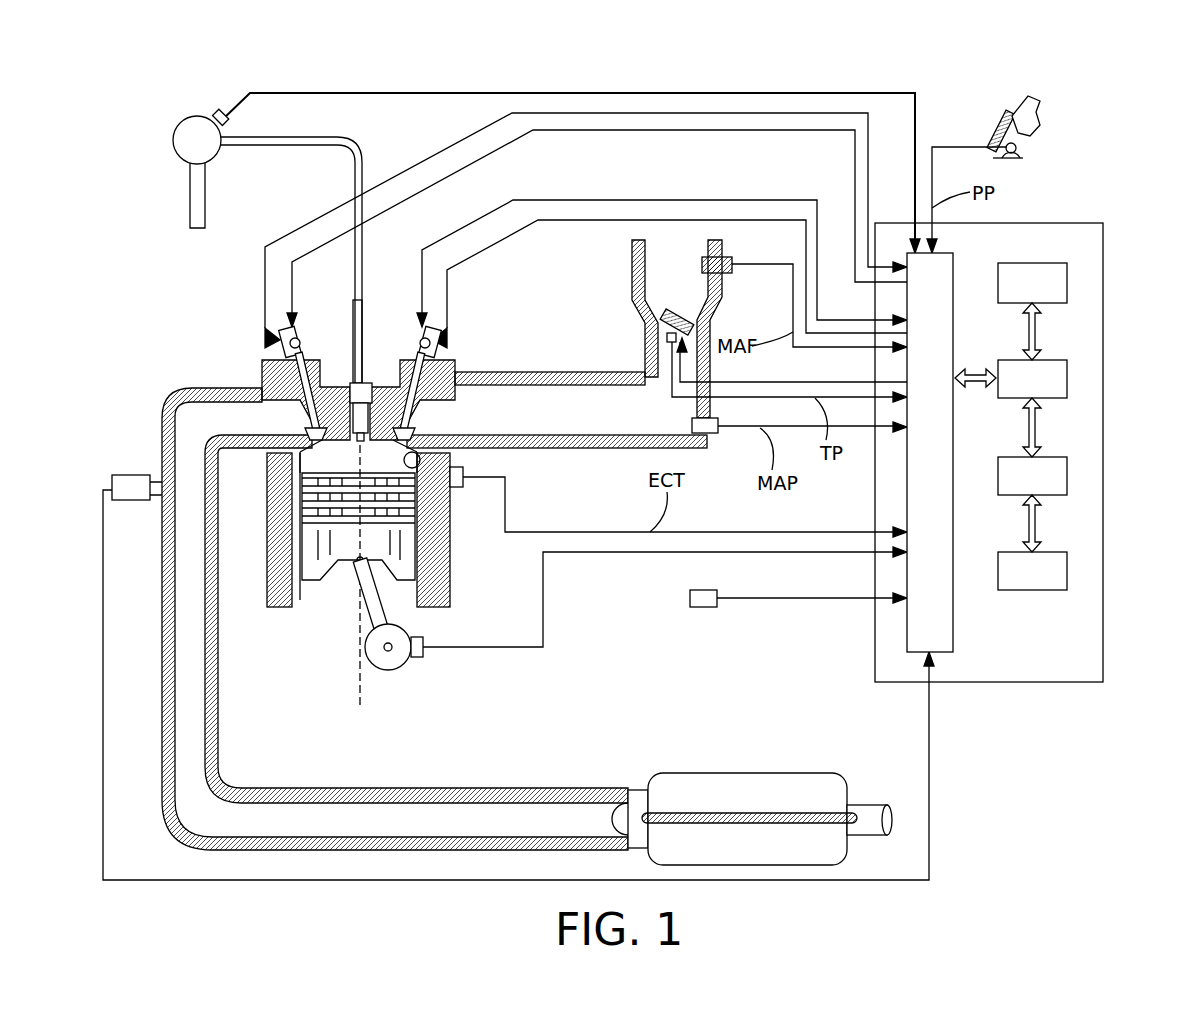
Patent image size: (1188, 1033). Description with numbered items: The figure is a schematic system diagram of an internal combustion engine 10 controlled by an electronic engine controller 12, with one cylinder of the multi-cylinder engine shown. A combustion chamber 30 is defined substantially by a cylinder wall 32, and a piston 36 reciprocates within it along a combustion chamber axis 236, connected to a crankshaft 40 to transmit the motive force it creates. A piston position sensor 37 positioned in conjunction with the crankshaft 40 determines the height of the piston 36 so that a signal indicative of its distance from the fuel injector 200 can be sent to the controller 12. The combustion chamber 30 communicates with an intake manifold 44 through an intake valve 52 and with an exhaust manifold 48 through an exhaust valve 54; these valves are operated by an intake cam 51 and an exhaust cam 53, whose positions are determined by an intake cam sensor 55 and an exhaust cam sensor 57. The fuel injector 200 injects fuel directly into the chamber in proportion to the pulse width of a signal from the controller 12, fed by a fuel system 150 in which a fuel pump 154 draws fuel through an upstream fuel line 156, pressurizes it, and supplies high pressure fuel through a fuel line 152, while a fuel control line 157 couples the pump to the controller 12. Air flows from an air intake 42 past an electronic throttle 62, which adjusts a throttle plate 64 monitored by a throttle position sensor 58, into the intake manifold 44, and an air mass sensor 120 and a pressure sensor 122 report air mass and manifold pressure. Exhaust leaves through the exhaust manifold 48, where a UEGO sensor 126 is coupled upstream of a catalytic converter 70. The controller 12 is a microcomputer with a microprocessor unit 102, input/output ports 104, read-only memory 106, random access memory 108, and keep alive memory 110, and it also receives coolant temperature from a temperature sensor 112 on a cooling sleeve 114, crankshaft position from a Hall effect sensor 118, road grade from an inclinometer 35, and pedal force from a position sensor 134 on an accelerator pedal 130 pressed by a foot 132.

The internal combustion engine 10 is at (170, 322).
The electronic engine controller 12 is at (1105, 242).
The combustion chamber 30 is at (335, 460).
The cylinder wall 32 is at (302, 590).
The inclinometer 35 is at (708, 607).
The piston 36 is at (345, 558).
The piston position sensor 37 is at (418, 660).
The crankshaft 40 is at (385, 672).
The air intake 42 is at (688, 282).
The intake manifold 44 is at (596, 428).
The exhaust manifold 48 is at (238, 430).
The intake cam 51 is at (415, 325).
The intake valve 52 is at (407, 430).
The exhaust cam 53 is at (302, 325).
The exhaust valve 54 is at (262, 395).
The intake cam sensor 55 is at (432, 355).
The exhaust cam sensor 57 is at (278, 355).
The throttle position sensor 58 is at (668, 338).
The electronic throttle 62 is at (693, 328).
The throttle plate 64 is at (662, 322).
The catalytic converter 70 is at (668, 773).
The microprocessor unit 102 is at (1067, 380).
The input/output ports 104 is at (955, 268).
The read-only memory 106 is at (1067, 283).
The random access memory 108 is at (1067, 477).
The keep alive memory 110 is at (1067, 572).
The temperature sensor 112 is at (457, 490).
The cooling sleeve 114 is at (450, 575).
The Hall effect sensor 118 is at (424, 648).
The air mass sensor 120 is at (725, 258).
The pressure sensor 122 is at (712, 435).
The Universal Exhaust Gas Oxygen (UEGO) sensor 126 is at (108, 482).
The accelerator pedal 130 is at (992, 115).
The foot 132 is at (1040, 115).
The position sensor 134 is at (1023, 150).
The fuel system 150 is at (395, 88).
The fuel line 152 is at (257, 147).
The fuel pump 154 is at (222, 118).
The upstream fuel line 156 is at (190, 205).
The fuel control line 157 is at (505, 92).
The fuel injector 200 is at (355, 392).
The combustion chamber axis 236 is at (357, 690).